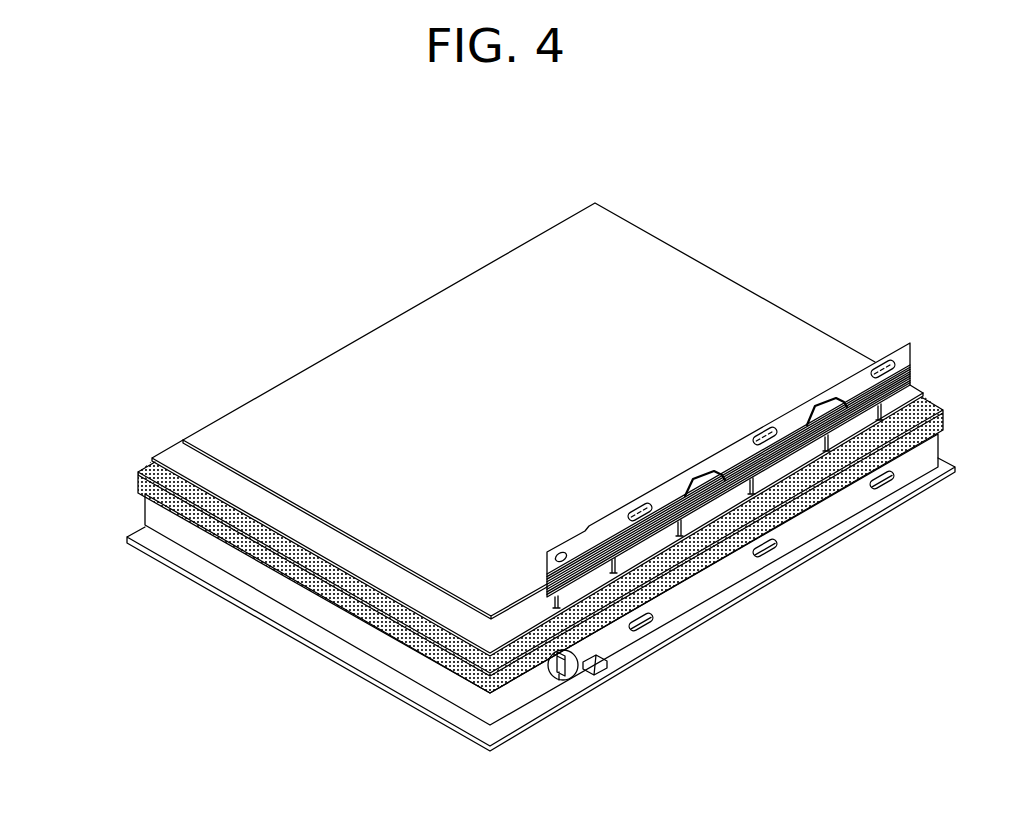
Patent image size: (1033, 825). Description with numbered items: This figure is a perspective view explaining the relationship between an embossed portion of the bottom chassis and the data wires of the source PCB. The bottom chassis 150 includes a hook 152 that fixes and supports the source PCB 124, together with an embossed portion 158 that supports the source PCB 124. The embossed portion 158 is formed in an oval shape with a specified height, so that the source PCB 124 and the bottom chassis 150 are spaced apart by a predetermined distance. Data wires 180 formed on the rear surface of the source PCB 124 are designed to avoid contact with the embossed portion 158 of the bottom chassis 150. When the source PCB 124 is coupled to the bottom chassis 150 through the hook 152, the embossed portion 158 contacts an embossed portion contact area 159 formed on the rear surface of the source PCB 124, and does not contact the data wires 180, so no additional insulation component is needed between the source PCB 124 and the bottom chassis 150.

The source PCB 124 is at (902, 357).
The bottom chassis 150 is at (157, 512).
The hook 152 is at (567, 681).
The embossed portion 158 is at (771, 557).
The embossed portion contact area 159 is at (763, 425).
The data wires 180 is at (818, 405).